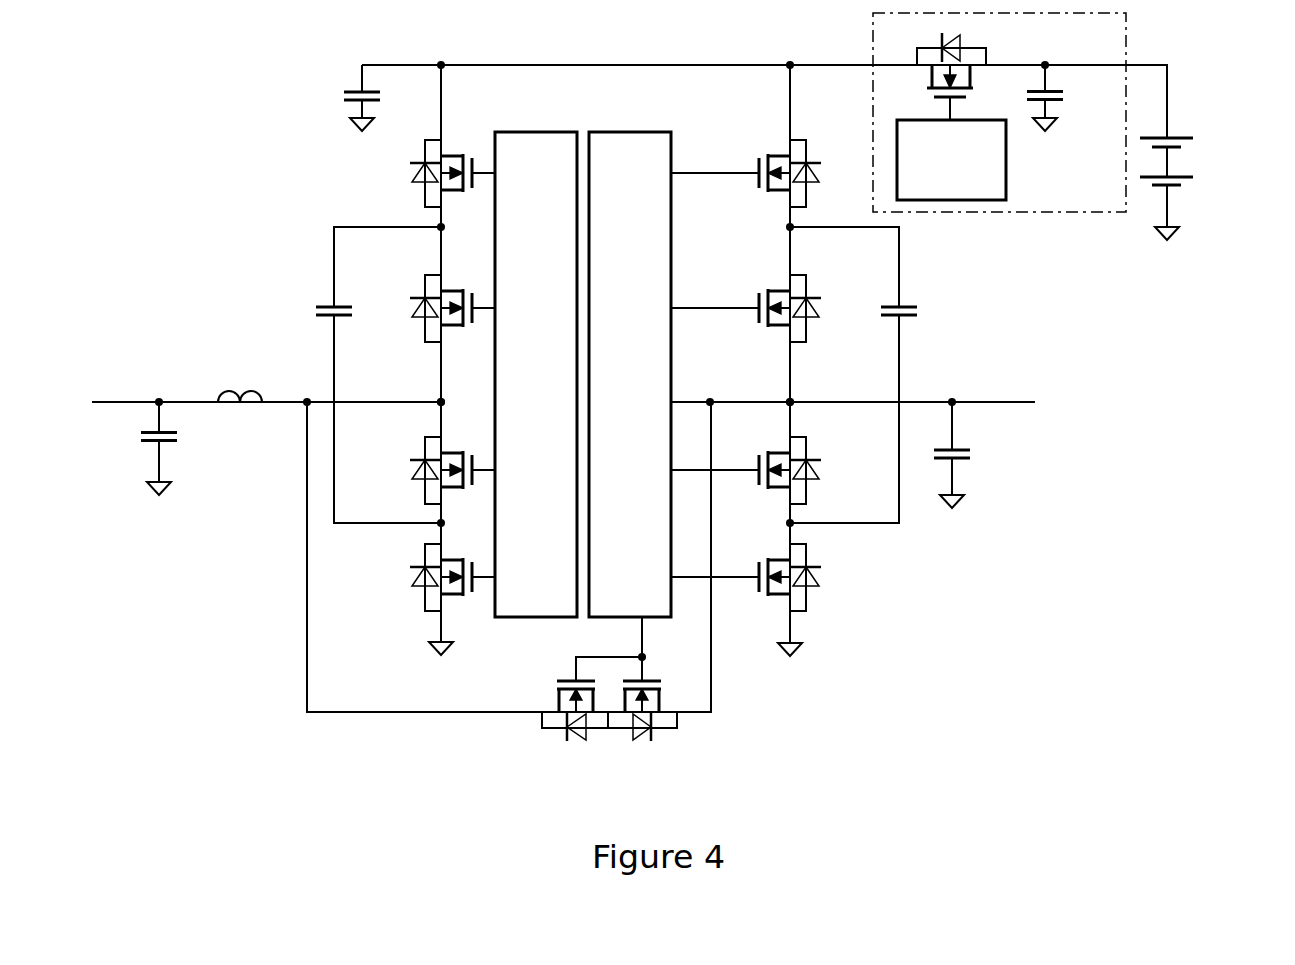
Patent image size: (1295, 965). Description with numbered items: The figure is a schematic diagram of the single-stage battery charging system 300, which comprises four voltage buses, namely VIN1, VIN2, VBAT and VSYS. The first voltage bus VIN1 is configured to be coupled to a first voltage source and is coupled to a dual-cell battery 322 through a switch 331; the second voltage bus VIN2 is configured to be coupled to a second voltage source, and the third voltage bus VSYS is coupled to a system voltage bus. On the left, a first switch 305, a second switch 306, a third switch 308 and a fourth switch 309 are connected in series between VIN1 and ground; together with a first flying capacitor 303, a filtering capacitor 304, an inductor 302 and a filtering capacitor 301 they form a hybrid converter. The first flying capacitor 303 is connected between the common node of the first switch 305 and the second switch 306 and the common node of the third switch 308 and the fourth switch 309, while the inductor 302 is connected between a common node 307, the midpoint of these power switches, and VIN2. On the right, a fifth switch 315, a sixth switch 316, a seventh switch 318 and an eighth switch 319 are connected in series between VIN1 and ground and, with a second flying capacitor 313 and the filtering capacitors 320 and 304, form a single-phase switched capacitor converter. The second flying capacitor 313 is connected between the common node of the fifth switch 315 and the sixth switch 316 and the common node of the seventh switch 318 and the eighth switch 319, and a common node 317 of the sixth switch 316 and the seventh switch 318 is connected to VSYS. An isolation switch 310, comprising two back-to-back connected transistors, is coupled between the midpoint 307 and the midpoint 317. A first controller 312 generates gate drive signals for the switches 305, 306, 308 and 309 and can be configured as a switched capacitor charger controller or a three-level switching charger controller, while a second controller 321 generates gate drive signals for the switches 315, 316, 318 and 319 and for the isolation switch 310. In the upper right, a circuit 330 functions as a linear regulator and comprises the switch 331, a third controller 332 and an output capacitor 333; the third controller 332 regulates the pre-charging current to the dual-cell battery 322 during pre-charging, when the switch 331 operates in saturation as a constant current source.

The single-stage battery charging system 300 is at (252, 147).
The filtering capacitor 301 is at (150, 447).
The inductor 302 is at (238, 410).
The first flying capacitor 303 is at (312, 302).
The filtering capacitor 304 is at (340, 108).
The first switch 305 is at (410, 197).
The second switch 306 is at (416, 292).
The common node 307 is at (437, 400).
The third switch 308 is at (412, 490).
The fourth switch 309 is at (410, 584).
The isolation switch 310 is at (552, 698).
The first controller 312 is at (507, 123).
The second flying capacitor 313 is at (905, 302).
The fifth switch 315 is at (818, 178).
The sixth switch 316 is at (822, 302).
The common node 317 is at (794, 401).
The seventh switch 318 is at (818, 492).
The eighth switch 319 is at (828, 586).
The filtering capacitor 320 is at (965, 460).
The second controller 321 is at (632, 124).
The dual-cell battery 322 is at (1178, 132).
The circuit 330 is at (872, 46).
The switch 331 is at (990, 52).
The third controller 332 is at (1008, 170).
The output capacitor 333 is at (1060, 105).